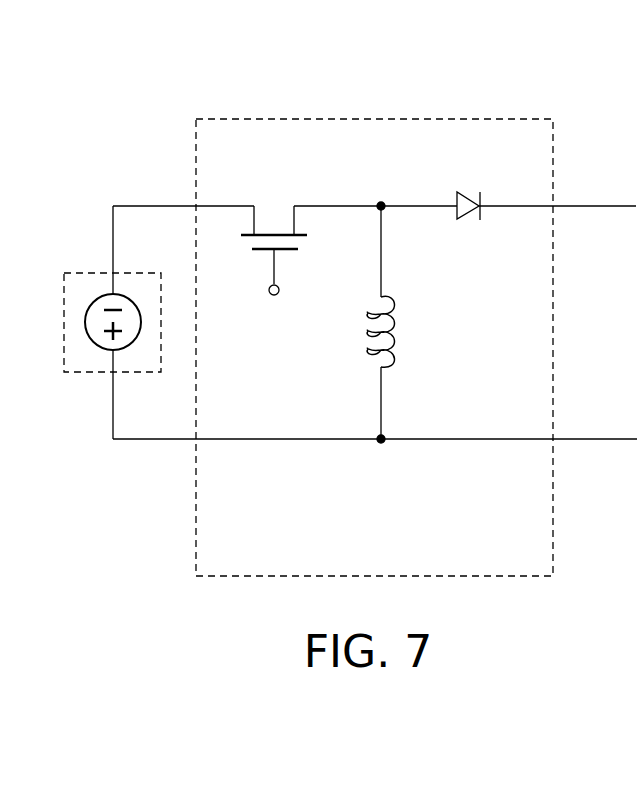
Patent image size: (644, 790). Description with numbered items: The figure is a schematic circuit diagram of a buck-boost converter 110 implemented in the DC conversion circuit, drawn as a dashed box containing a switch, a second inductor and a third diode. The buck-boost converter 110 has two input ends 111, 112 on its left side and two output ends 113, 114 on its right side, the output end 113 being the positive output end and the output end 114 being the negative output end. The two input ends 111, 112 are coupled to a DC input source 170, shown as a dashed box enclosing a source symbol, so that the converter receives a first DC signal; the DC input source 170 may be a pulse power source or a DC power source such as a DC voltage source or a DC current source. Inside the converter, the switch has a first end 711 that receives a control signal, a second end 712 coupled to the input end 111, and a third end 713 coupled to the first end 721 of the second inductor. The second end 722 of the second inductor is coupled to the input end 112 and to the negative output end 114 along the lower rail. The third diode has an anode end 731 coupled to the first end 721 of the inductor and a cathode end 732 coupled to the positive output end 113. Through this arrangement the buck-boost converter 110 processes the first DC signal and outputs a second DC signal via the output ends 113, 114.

The buck-boost converter 110 is at (414, 119).
The input end 111 is at (167, 205).
The input end 112 is at (168, 441).
The output end 113 is at (584, 205).
The output end 114 is at (583, 441).
The DC input source 170 is at (85, 273).
The first end of the switch 711 is at (275, 268).
The second end of the switch 712 is at (232, 205).
The third end of the switch 713 is at (322, 205).
The first end of the second inductor 721 is at (383, 283).
The second end of the second inductor 722 is at (383, 379).
The anode end of the third diode 731 is at (435, 205).
The cathode end of the third diode 732 is at (507, 205).